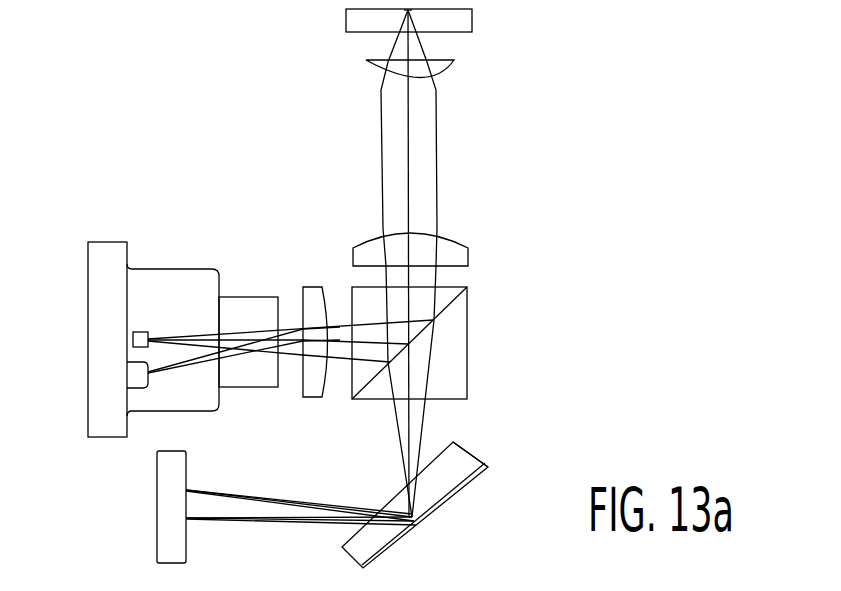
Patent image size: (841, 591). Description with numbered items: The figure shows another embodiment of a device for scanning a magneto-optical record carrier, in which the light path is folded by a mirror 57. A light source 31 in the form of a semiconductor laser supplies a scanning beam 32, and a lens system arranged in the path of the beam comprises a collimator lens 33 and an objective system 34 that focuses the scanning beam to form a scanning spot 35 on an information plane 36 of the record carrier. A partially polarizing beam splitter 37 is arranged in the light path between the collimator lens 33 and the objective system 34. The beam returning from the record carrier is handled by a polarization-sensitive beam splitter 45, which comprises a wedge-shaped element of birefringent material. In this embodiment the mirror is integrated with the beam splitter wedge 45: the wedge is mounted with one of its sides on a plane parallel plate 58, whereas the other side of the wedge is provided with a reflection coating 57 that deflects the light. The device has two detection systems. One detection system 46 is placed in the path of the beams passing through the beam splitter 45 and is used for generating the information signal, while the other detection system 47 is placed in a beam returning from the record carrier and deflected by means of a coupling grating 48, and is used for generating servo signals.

The light source 31 is at (132, 341).
The scanning beam 32 is at (183, 335).
The collimator lens 33 is at (470, 254).
The objective system 34 is at (446, 62).
The scanning spot 35 is at (385, 3).
The information plane 36 is at (467, 6).
The partially polarizing beam splitter 37 is at (470, 309).
The polarization-sensitive beam splitter 45 is at (482, 461).
The detection system 46 is at (185, 503).
The detection system 47 is at (128, 378).
The coupling grating 48 is at (277, 335).
The mirror 57 is at (488, 467).
The plane parallel plate 58 is at (462, 450).